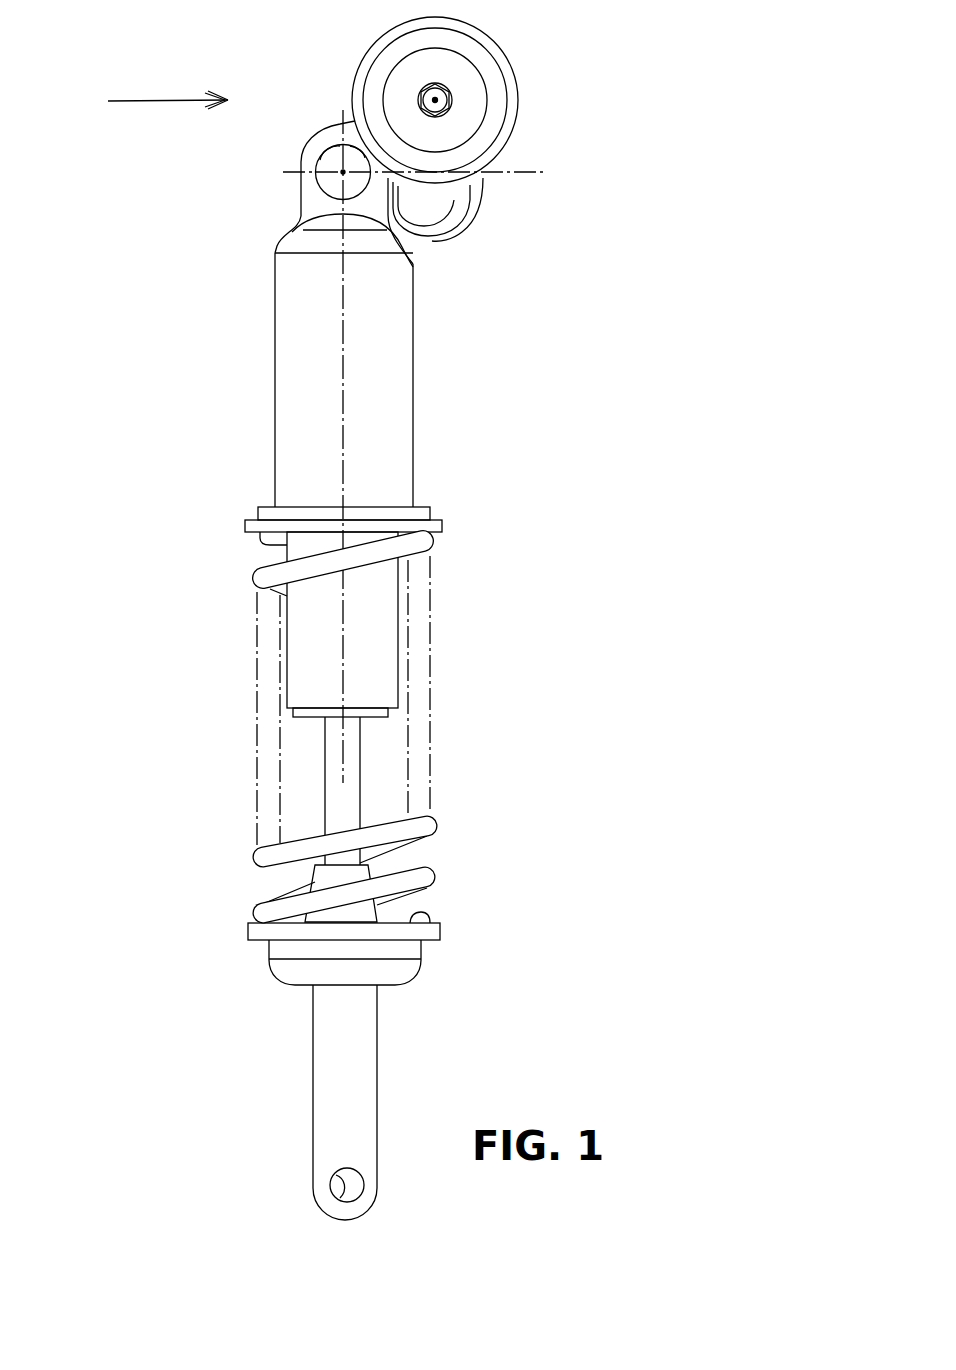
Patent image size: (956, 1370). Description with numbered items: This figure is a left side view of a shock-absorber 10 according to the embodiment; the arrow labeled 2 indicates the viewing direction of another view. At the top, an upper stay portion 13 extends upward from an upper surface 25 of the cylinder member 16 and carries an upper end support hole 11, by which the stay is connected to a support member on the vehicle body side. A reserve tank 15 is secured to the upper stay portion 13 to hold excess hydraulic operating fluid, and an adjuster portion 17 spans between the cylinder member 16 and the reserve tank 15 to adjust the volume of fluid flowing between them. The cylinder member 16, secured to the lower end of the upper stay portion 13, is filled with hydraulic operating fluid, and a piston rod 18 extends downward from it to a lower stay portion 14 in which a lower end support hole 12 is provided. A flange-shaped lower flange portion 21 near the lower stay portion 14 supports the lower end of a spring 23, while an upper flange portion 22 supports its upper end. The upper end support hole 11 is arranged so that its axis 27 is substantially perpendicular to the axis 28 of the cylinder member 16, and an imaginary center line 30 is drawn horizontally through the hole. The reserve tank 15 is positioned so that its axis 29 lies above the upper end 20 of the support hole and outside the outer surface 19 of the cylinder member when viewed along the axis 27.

The view direction arrow for FIG. 2 is at (151, 103).
The shock-absorber 10 is at (598, 355).
The upper end support hole 11 is at (315, 140).
The lower end support hole 12 is at (340, 1178).
The upper stay portion 13 is at (333, 133).
The lower stay portion 14 is at (345, 1072).
The reserve tank 15 is at (475, 103).
The cylinder member 16 is at (327, 360).
The adjuster portion 17 is at (470, 192).
The piston rod 18 is at (350, 755).
The outer surface of the cylinder member 19 is at (412, 320).
The upper end of the support hole 20 is at (363, 153).
The lower flange portion 21 is at (258, 933).
The upper flange portion 22 is at (252, 526).
The spring 23 is at (432, 645).
The upper surface of the cylinder member 25 is at (288, 231).
The axis of the upper end support hole 27 is at (312, 182).
The axis of the cylinder member 28 is at (343, 413).
The axis of the reserve tank 29 is at (438, 99).
The imaginary center line 30 is at (513, 172).